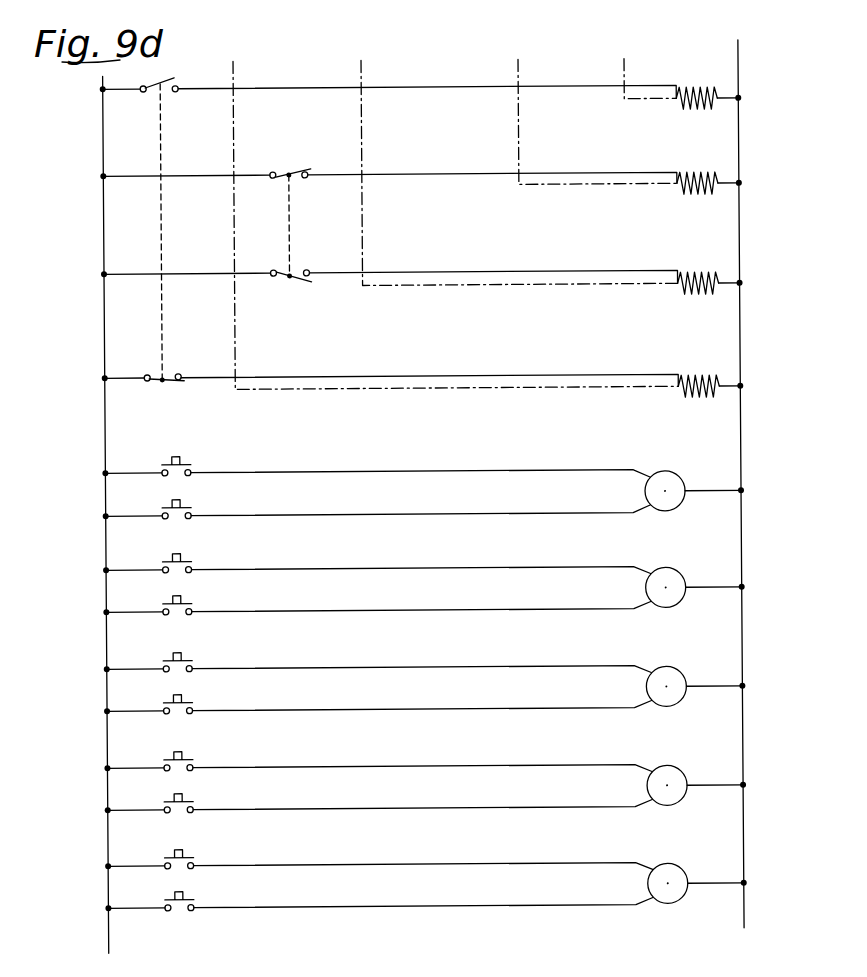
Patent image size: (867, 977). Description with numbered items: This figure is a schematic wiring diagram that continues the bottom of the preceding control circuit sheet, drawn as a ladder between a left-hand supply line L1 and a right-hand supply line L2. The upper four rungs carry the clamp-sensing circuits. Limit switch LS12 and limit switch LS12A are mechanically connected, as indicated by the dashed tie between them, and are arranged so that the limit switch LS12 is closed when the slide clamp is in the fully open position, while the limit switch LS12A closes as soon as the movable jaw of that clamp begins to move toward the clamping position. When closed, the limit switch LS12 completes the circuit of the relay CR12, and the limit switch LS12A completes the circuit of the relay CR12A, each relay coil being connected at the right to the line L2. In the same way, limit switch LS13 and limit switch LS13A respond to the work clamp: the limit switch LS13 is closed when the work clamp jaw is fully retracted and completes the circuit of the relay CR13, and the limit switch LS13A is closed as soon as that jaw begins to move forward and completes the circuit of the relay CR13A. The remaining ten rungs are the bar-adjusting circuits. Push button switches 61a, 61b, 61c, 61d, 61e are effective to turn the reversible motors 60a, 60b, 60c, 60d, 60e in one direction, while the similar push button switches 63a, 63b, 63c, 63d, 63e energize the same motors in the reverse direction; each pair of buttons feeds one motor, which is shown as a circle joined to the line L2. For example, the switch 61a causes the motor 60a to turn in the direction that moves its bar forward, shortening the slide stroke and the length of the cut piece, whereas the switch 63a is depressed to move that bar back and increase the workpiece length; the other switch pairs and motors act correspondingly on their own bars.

The power supply line L1 is at (105, 133).
The power supply line L2 is at (736, 475).
The relay CR12 is at (703, 88).
The relay CR12A is at (702, 377).
The relay CR13 is at (703, 274).
The relay CR13A is at (701, 174).
The limit switch LS12 is at (167, 95).
The limit switch LS12A is at (172, 372).
The limit switch LS13 is at (299, 283).
The limit switch LS13A is at (299, 171).
The push button switch 61a is at (196, 468).
The push button switch 63a is at (196, 511).
The push button switch 61b is at (196, 565).
The push button switch 63b is at (196, 607).
The push button switch 61c is at (196, 664).
The push button switch 63c is at (196, 706).
The push button switch 61d is at (196, 763).
The push button switch 63d is at (196, 805).
The push button switch 61e is at (196, 861).
The push button switch 63e is at (196, 903).
The reversible motor 60a is at (673, 473).
The reversible motor 60b is at (673, 570).
The reversible motor 60c is at (673, 669).
The reversible motor 60d is at (673, 768).
The reversible motor 60e is at (673, 866).